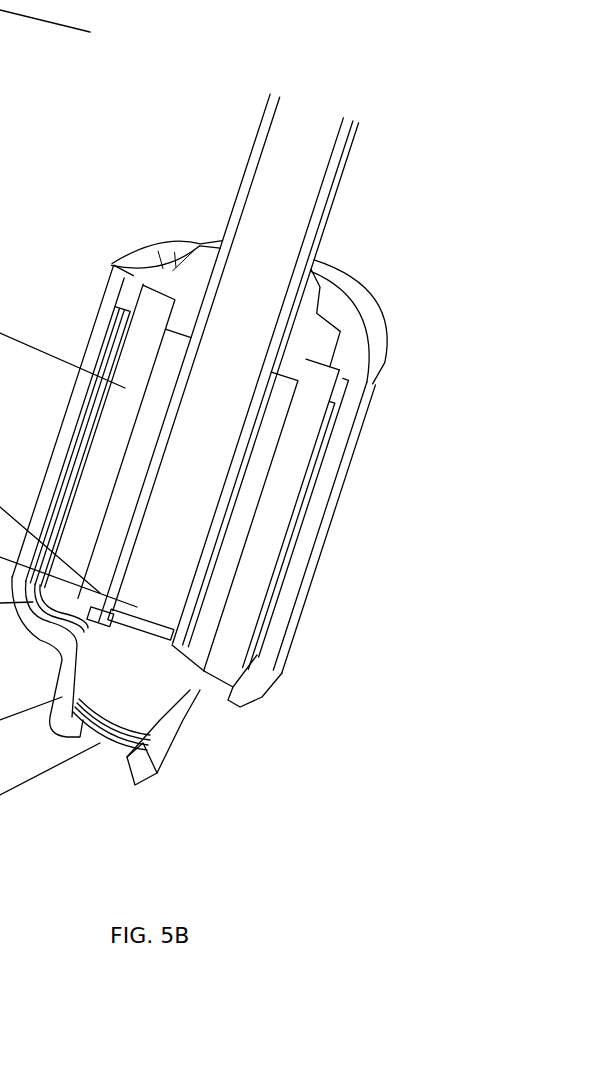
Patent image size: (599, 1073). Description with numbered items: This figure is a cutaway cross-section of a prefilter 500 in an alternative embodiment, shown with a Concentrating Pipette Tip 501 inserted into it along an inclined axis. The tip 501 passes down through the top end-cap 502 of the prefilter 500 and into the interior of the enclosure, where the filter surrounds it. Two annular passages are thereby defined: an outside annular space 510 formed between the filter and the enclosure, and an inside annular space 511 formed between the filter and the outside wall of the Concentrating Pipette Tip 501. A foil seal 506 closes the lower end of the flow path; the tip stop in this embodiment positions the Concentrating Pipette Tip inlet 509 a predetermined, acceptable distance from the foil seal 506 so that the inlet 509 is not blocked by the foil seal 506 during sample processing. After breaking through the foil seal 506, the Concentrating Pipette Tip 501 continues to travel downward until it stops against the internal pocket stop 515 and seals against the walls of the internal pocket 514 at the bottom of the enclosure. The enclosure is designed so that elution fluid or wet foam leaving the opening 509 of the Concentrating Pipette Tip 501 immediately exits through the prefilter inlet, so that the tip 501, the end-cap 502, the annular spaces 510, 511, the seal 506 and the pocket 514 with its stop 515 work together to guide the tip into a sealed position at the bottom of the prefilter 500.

The prefilter 500 is at (277, 870).
The Concentrating Pipette Tip 501 is at (300, 145).
The top end-cap 502 is at (150, 257).
The foil seal 506 is at (147, 650).
The Concentrating Pipette Tip inlet 509 is at (143, 630).
The outside annular space 510 is at (278, 572).
The inside annular space 511 is at (227, 550).
The internal pocket 514 is at (147, 743).
The internal pocket stop 515 is at (147, 747).